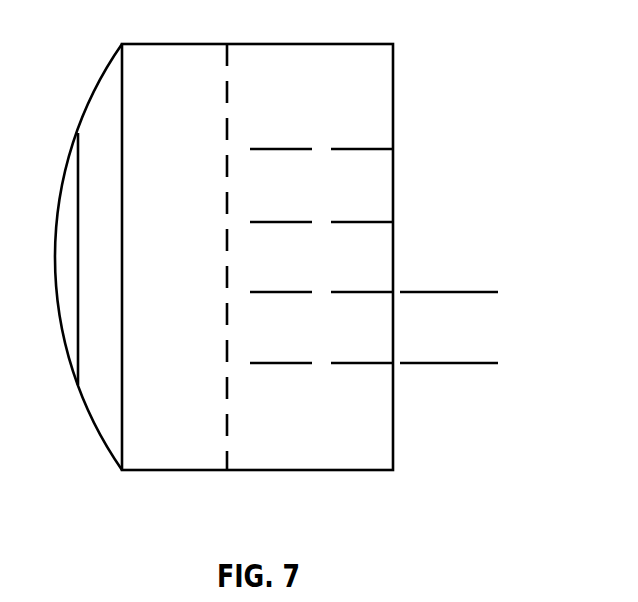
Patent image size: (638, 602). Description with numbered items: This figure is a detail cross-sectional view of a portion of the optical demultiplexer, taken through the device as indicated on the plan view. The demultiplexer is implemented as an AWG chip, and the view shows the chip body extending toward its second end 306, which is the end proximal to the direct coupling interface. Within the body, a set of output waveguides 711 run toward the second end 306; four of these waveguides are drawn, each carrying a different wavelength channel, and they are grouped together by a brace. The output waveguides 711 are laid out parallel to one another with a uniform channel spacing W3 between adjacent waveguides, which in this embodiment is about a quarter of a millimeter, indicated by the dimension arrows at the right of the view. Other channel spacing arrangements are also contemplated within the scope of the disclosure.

The second end 306 is at (386, 105).
The output waveguides 711 is at (213, 142).
The channel spacing W3 is at (498, 407).